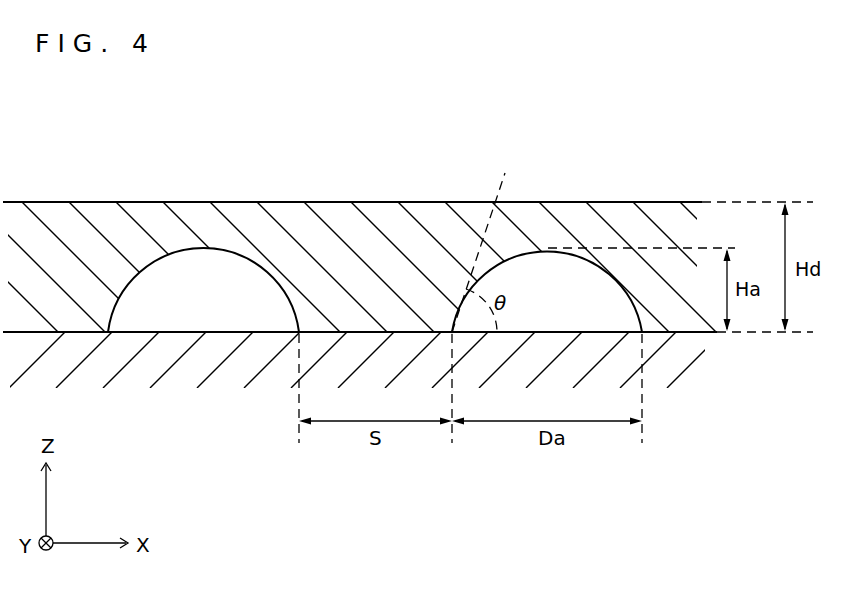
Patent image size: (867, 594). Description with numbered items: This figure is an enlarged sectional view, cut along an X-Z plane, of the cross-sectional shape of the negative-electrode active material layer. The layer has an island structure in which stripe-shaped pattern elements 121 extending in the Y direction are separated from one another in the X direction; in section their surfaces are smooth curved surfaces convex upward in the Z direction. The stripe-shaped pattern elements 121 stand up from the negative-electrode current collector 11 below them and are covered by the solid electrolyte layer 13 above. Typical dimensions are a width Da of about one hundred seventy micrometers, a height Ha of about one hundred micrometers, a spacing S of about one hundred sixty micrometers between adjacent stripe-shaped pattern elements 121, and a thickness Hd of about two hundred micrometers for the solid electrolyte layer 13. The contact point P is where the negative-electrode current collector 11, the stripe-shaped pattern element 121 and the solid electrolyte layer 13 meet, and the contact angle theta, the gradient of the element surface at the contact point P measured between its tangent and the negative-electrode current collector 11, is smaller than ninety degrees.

The solid electrolyte layer 13 is at (147, 202).
The stripe-shaped pattern element 121 is at (228, 265).
The negative-electrode current collector 11 is at (392, 381).
The contact point P is at (450, 331).